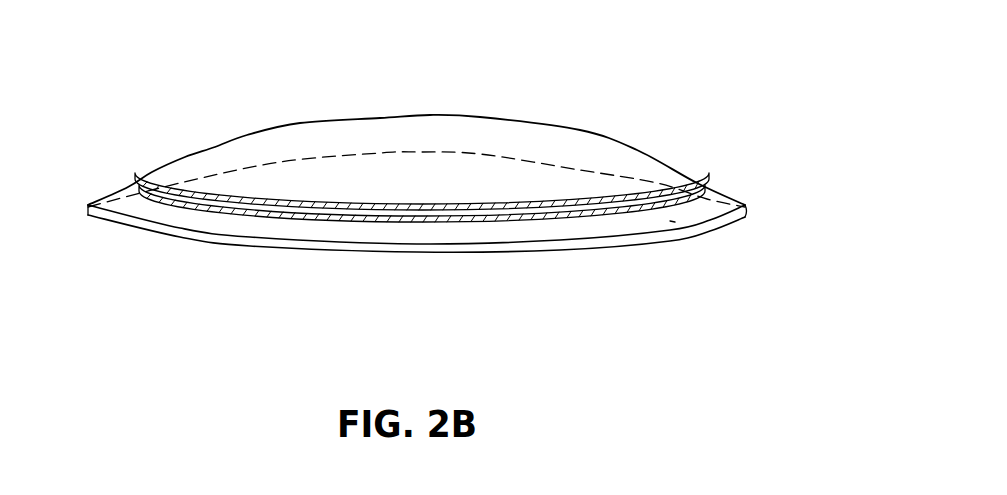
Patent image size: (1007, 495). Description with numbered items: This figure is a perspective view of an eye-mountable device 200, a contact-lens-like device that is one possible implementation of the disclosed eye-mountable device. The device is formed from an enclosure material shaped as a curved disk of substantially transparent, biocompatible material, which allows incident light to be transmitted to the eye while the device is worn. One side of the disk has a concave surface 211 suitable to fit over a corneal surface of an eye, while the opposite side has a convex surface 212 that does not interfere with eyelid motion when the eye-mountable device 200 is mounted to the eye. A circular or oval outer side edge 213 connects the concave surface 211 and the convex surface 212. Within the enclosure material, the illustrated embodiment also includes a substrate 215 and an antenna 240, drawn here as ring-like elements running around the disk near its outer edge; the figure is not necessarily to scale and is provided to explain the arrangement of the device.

The eye-mountable device 200 is at (188, 126).
The concave surface 211 is at (671, 230).
The convex surface 212 is at (657, 160).
The outer side edge 213 is at (566, 244).
The substrate 215 is at (131, 187).
The antenna 240 is at (695, 178).